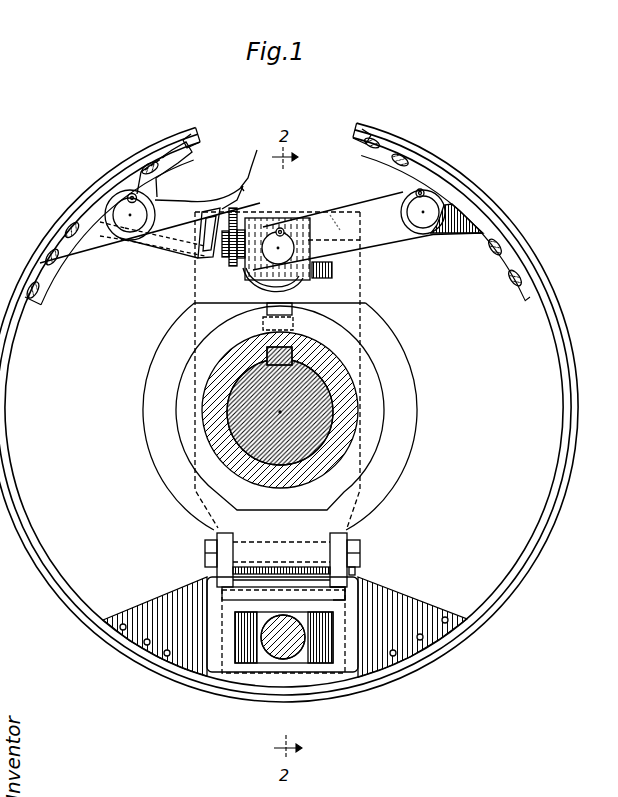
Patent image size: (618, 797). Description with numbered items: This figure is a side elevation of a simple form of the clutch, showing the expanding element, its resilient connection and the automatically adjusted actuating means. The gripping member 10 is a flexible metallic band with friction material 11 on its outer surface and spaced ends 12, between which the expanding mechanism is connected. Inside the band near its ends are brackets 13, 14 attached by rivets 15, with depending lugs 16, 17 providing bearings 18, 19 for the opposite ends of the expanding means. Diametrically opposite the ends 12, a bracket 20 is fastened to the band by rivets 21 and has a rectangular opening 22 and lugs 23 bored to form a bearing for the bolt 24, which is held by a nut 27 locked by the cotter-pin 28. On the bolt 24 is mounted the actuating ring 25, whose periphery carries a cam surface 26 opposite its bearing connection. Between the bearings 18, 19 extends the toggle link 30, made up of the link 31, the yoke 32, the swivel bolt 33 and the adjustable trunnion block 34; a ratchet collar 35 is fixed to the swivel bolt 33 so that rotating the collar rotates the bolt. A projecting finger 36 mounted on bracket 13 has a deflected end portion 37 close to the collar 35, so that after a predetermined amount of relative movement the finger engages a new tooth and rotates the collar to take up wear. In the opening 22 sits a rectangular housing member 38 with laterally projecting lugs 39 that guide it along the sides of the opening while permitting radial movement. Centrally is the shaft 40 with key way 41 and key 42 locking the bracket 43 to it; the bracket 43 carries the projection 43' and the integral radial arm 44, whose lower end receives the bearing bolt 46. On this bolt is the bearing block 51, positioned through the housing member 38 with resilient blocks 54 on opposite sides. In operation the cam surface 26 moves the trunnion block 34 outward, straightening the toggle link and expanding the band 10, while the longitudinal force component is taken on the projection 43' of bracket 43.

The gripping member 10 is at (482, 210).
The friction material 11 is at (523, 250).
The spaced ends 12 is at (356, 124).
The bracket 13 is at (140, 178).
The bracket 14 is at (508, 270).
The rivets 15 is at (42, 262).
The depending lug 16 is at (150, 180).
The depending lug 17 is at (413, 188).
The bearing 18 is at (118, 208).
The bearing 19 is at (425, 238).
The bracket 20 is at (413, 607).
The rivets 21 is at (428, 638).
The rectangular opening 22 is at (342, 592).
The lugs 23 is at (222, 534).
The bolt 24 is at (206, 552).
The actuating ring 25 is at (407, 382).
The cam surface 26 is at (345, 289).
The nut 27 is at (353, 550).
The cotter-pin 28 is at (358, 572).
The toggle link 30 is at (372, 196).
The link 31 is at (388, 202).
The yoke 32 is at (173, 250).
The swivel bolt 33 is at (247, 240).
The adjustable trunnion block 34 is at (232, 260).
The ratchet collar 35 is at (214, 255).
The projecting finger 36 is at (150, 232).
The deflected end portion 37 is at (251, 167).
The housing member 38 is at (335, 663).
The laterally projecting lugs 39 is at (210, 660).
The shaft 40 is at (240, 393).
The key way 41 is at (292, 366).
The key 42 is at (230, 350).
The bracket 43 is at (330, 410).
The projection 43' is at (358, 267).
The radial arm 44 is at (190, 505).
The bearing bolt 46 is at (273, 657).
The bearing block 51 is at (293, 657).
The resilient blocks 54 is at (243, 660).